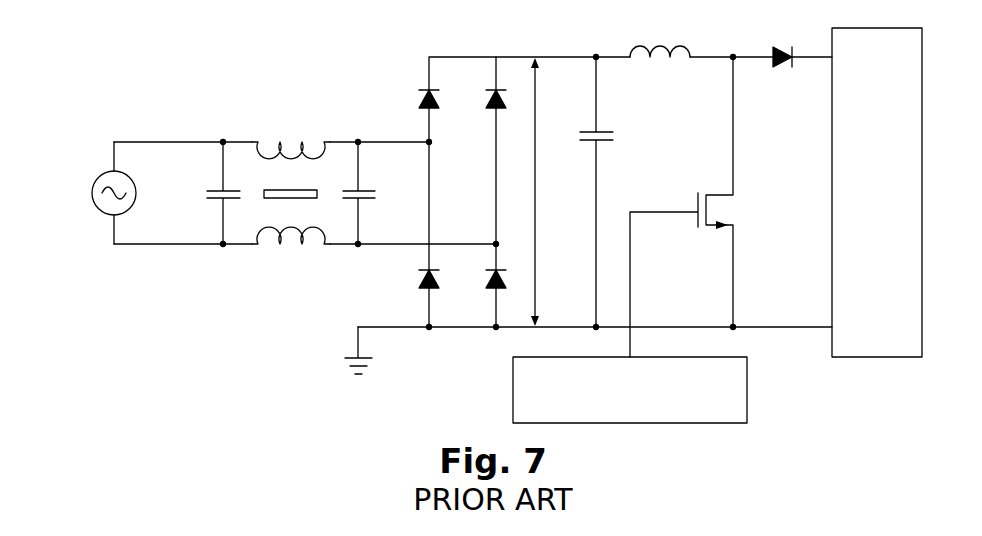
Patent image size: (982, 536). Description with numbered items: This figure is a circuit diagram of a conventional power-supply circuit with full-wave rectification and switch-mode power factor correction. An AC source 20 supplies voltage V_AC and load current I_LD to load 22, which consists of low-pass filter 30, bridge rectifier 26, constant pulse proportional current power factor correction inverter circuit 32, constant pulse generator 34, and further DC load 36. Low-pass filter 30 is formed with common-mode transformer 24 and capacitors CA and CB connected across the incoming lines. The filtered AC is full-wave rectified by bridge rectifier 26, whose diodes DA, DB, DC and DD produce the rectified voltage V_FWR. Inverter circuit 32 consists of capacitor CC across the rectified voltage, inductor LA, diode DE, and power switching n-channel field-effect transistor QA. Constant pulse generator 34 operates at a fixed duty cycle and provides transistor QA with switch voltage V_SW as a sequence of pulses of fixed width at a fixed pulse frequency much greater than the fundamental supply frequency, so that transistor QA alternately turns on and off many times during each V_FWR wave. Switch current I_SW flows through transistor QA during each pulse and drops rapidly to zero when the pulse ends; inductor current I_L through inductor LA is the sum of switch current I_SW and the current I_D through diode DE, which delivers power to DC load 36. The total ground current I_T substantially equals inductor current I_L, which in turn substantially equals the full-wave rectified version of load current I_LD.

The AC source 20 is at (106, 212).
The load 22 is at (551, 254).
The common-mode transformer 24 is at (293, 137).
The bridge rectifier 26 is at (443, 192).
The low-pass filter 30 is at (276, 263).
The constant pulse proportional current power factor correction inverter circuit 32 is at (718, 178).
The constant pulse generator 34 is at (512, 392).
The further DC load 36 is at (884, 358).
The capacitor CA is at (213, 190).
The capacitor CB is at (368, 190).
The capacitor CC is at (590, 131).
The diode DA is at (425, 110).
The diode DB is at (424, 292).
The diode DC is at (490, 110).
The diode DD is at (490, 292).
The diode DE is at (784, 50).
The inductor LA is at (662, 42).
The power switching n-channel field-effect transistor QA is at (694, 222).